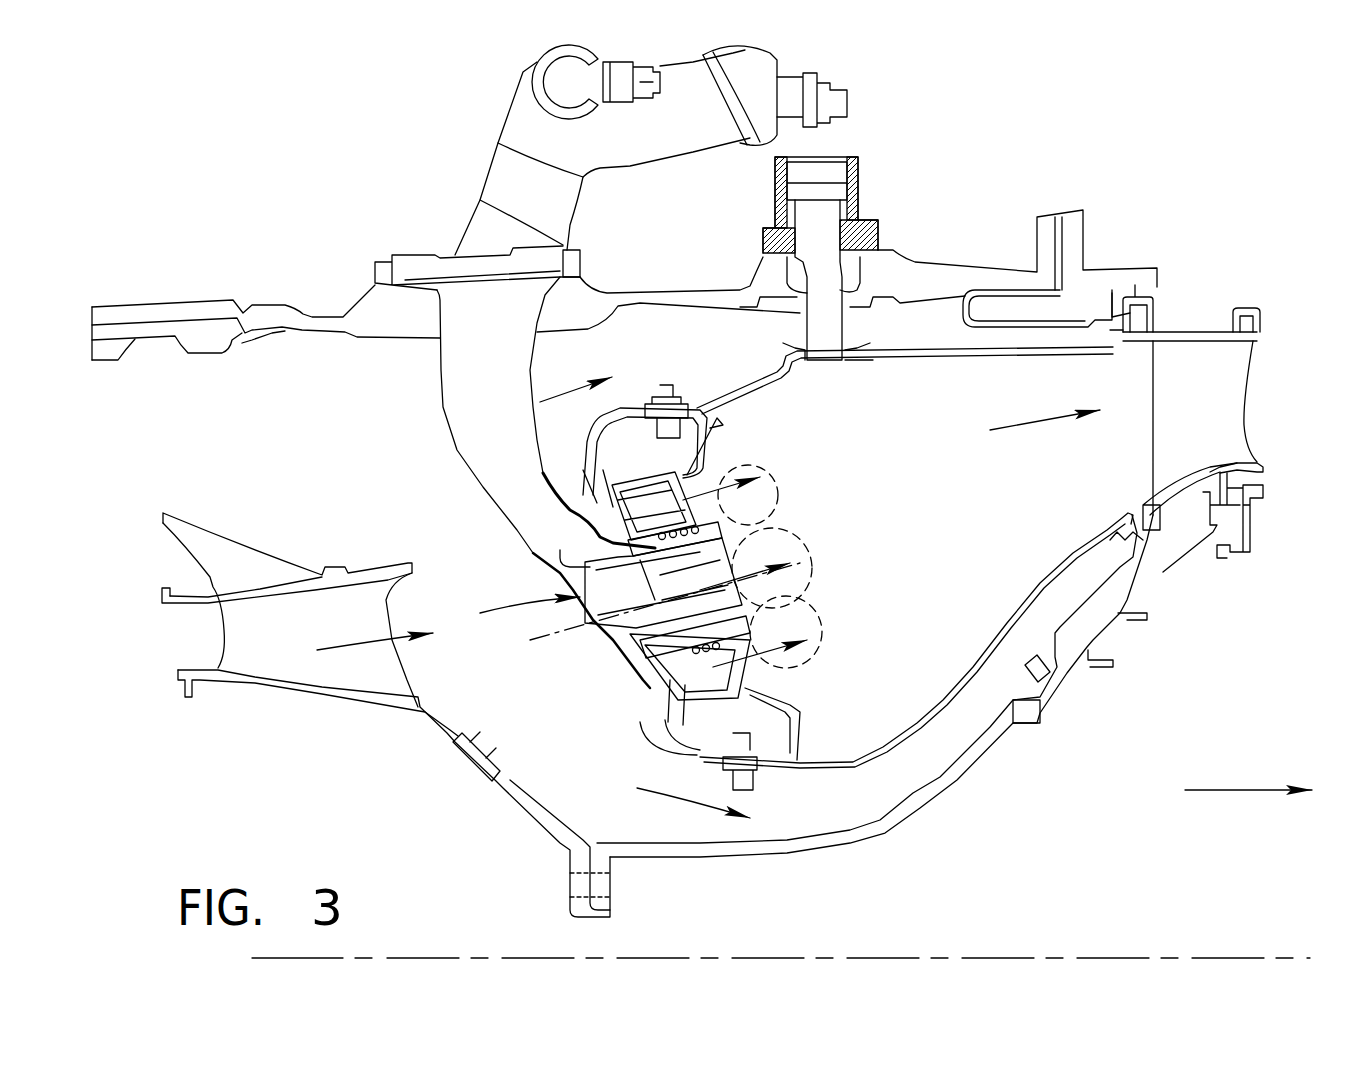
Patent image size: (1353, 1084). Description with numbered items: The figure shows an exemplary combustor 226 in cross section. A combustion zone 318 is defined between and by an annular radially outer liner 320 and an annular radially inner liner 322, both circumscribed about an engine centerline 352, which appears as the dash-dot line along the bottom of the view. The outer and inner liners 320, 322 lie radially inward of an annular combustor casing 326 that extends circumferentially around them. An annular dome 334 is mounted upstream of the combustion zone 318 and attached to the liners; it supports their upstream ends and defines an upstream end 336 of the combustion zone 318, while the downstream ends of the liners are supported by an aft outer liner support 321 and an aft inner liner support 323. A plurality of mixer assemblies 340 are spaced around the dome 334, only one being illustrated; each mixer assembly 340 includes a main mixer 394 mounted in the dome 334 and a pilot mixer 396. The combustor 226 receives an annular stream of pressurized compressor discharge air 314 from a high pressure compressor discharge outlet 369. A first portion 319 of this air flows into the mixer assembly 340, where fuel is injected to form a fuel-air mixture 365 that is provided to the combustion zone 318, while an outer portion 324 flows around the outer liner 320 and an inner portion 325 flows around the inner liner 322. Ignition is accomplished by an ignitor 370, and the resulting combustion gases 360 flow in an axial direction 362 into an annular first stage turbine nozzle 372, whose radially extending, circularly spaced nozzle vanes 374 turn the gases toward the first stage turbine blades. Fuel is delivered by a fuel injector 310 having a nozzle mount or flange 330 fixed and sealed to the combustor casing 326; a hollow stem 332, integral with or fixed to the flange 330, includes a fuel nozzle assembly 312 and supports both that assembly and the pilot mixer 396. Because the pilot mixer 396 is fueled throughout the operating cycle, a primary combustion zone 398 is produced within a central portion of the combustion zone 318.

The combustor 226 is at (1103, 95).
The fuel injector 310 is at (482, 178).
The fuel nozzle assembly 312 is at (562, 531).
The compressor discharge air 314 is at (353, 653).
The combustion zone 318 is at (895, 491).
The first portion of compressor discharge air 319 is at (517, 607).
The outer liner 320 is at (912, 348).
The aft outer liner support 321 is at (1093, 322).
The inner liner 322 is at (862, 762).
The aft inner liner support 323 is at (1127, 577).
The outer portion of compressor discharge air 324 is at (557, 395).
The inner portion of compressor discharge air 325 is at (672, 812).
The combustor casing 326 is at (930, 272).
The nozzle mount or flange 330 is at (410, 270).
The hollow stem 332 is at (455, 452).
The dome 334 is at (700, 398).
The upstream end 336 is at (822, 418).
The mixer assembly 340 is at (638, 468).
The engine centerline 352 is at (1048, 958).
The combustion gases 360 is at (1030, 418).
The axial direction 362 is at (1237, 793).
The fuel-air mixture 365 is at (735, 464).
The high pressure compressor discharge outlet 369 is at (365, 629).
The ignitor 370 is at (868, 165).
The first stage turbine nozzle 372 is at (1207, 328).
The nozzle vanes 374 is at (1237, 420).
The main mixer 394 is at (706, 762).
The pilot mixer 396 is at (618, 660).
The primary combustion zone 398 is at (820, 567).